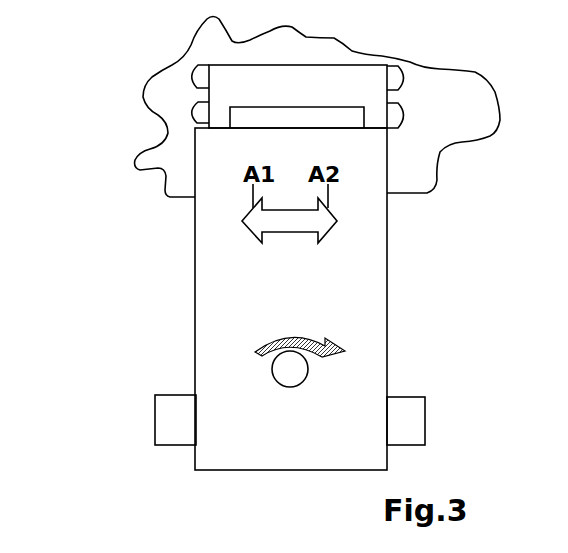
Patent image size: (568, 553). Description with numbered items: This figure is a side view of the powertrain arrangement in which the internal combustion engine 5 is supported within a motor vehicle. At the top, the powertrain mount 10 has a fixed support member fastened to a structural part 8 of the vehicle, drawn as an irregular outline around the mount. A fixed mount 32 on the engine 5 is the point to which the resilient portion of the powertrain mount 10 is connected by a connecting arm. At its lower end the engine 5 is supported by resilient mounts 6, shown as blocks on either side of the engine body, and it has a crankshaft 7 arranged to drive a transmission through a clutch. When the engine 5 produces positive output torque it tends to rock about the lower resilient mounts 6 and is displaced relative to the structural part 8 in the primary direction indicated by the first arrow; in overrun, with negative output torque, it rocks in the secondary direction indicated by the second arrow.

The internal combustion engine 5 is at (194, 237).
The resilient mounts 6 is at (153, 412).
The crankshaft 7 is at (233, 410).
The structural part 8 is at (134, 166).
The powertrain mount 10 is at (207, 90).
The fixed mount 32 is at (257, 106).